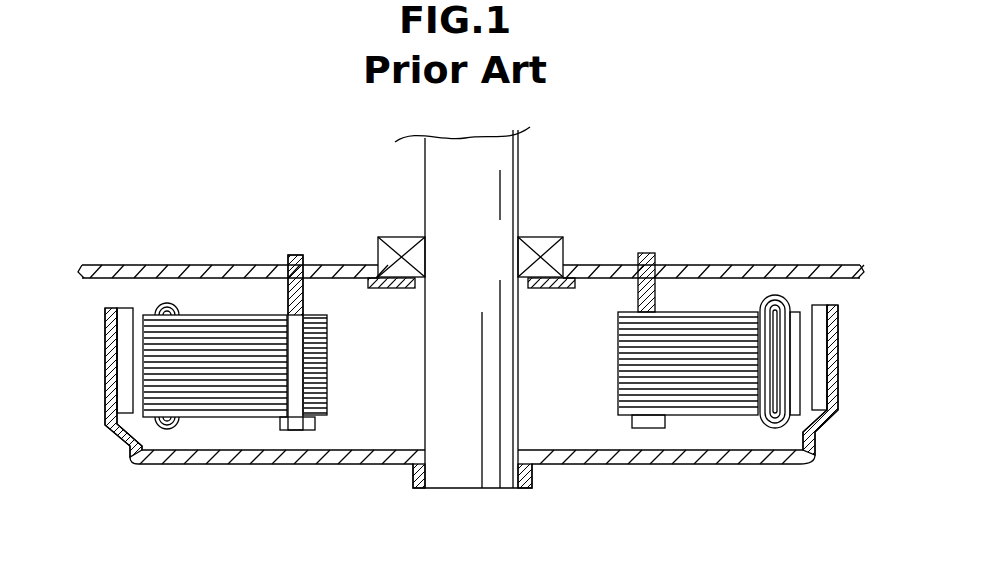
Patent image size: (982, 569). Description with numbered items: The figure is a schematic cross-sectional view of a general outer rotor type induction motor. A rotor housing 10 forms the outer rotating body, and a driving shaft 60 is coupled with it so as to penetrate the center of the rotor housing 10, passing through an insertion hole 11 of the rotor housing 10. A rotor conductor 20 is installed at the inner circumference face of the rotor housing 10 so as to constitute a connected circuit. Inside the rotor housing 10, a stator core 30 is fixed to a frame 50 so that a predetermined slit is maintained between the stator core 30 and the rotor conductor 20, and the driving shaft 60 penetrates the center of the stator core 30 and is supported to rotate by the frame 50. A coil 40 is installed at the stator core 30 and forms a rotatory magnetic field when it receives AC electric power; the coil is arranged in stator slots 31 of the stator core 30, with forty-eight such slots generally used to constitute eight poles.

The rotor housing 10 is at (125, 445).
The insertion hole 11 is at (430, 480).
The rotor conductor 20 is at (120, 337).
The stator core 30 is at (236, 315).
The stator slot 31 is at (755, 352).
The coil 40 is at (164, 310).
The frame 50 is at (731, 272).
The driving shaft 60 is at (518, 383).